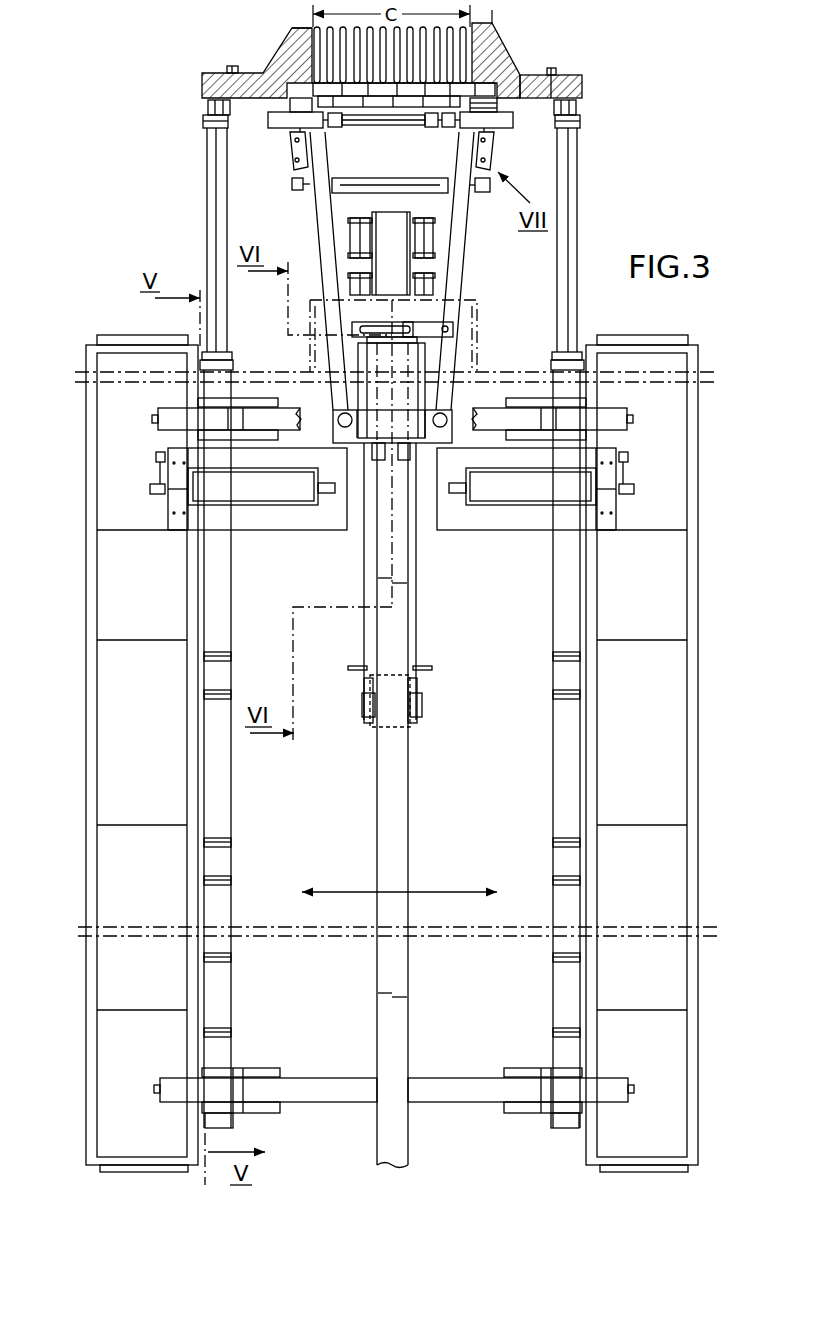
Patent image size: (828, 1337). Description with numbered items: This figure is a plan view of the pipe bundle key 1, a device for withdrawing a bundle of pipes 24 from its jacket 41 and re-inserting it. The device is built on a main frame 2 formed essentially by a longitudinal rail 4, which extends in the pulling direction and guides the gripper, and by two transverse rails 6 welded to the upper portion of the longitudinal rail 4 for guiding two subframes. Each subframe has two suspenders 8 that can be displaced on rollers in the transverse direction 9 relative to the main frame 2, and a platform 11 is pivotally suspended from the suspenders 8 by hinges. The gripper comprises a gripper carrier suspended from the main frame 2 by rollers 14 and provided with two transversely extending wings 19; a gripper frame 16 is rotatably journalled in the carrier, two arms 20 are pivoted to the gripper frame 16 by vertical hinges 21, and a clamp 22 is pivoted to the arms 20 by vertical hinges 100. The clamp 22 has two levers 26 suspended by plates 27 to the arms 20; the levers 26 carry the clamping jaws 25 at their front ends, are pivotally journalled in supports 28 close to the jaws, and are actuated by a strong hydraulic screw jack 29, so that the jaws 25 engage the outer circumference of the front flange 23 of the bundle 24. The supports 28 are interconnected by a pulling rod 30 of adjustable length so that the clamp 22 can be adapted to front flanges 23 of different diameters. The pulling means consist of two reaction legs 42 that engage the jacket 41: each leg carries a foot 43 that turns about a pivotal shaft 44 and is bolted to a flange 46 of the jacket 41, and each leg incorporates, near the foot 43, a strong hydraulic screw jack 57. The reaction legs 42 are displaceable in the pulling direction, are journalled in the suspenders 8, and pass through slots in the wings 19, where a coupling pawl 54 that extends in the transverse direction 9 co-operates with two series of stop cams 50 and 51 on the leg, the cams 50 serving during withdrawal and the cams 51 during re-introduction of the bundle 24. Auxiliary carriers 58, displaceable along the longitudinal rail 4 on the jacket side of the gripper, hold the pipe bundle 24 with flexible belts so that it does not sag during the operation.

The pipe bundle key 1 is at (661, 128).
The main frame 2 is at (409, 823).
The longitudinal rail 4 is at (392, 790).
The transverse rails 6 is at (170, 415).
The suspenders 8 is at (268, 1068).
The transverse direction 9 is at (360, 892).
The platform 11 is at (142, 776).
The rollers 14 is at (410, 728).
The gripper frame 16 is at (340, 413).
The wings 19 is at (250, 517).
The arms 20 is at (320, 233).
The vertical hinges 21 is at (340, 421).
The clamp 22 is at (500, 155).
The front flange 23 is at (637, 42).
The bundle of pipes 24 is at (147, 43).
The clamping jaws 25 is at (515, 97).
The levers 26 is at (287, 135).
The plates 27 is at (297, 148).
The supports 28 is at (280, 118).
The hydraulic screw jack 29 is at (390, 185).
The pulling rod 30 is at (380, 118).
The jacket 41 is at (300, 33).
The reaction legs 42 is at (206, 147).
The foot 43 is at (208, 105).
The pivotal shaft 44 is at (210, 121).
The flange 46 is at (202, 80).
The stop cams 50 is at (220, 657).
The stop cams 51 is at (217, 692).
The coupling pawl 54 is at (230, 485).
The hydraulic screw jacks 57 is at (212, 205).
The auxiliary carriers 58 is at (425, 240).
The vertical hinges 100 is at (320, 140).